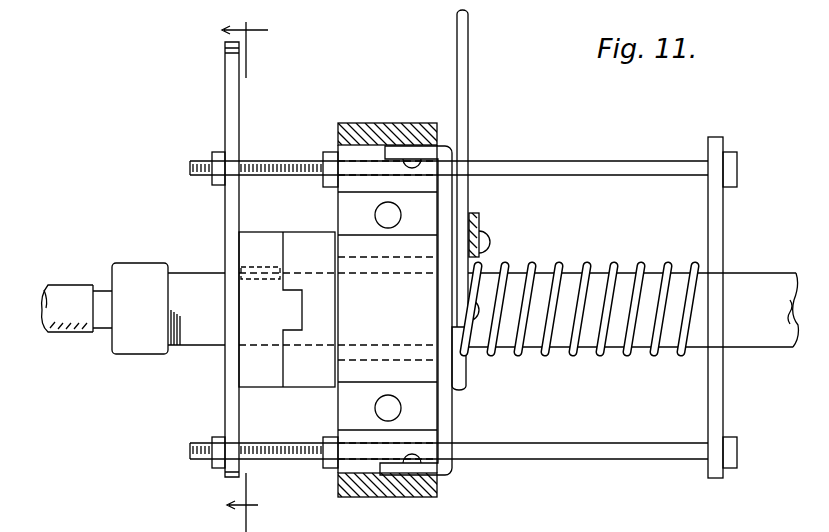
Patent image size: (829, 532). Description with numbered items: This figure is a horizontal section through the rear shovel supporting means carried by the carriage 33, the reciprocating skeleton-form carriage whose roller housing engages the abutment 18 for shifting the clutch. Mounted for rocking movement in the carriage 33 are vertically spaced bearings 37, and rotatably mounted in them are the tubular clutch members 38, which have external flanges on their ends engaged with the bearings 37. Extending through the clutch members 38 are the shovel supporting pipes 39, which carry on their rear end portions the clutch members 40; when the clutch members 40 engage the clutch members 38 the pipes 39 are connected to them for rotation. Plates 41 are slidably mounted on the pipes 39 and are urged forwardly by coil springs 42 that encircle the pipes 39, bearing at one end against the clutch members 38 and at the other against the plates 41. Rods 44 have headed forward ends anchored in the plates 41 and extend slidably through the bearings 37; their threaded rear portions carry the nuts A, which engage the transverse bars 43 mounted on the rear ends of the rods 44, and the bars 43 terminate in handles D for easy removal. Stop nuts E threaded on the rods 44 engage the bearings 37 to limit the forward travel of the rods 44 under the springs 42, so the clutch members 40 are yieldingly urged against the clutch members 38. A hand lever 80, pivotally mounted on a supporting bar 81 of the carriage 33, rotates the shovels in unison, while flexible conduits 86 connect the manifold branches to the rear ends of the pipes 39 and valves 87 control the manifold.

The abutment 18 is at (245, 268).
The carriage 33 is at (358, 107).
The bearings 37 is at (346, 203).
The clutch members 38 is at (317, 370).
The shovel supporting pipes 39 is at (760, 285).
The clutch members 40 is at (255, 368).
The plates 41 is at (722, 210).
The coil springs 42 is at (620, 262).
The transverse bars 43 is at (238, 205).
The rods 44 is at (643, 162).
The hand lever 80 is at (473, 47).
The supporting bar 81 is at (444, 193).
The flexible conduits 86 is at (63, 295).
The valves 87 is at (480, 218).
The nuts A is at (212, 153).
The handles D is at (232, 70).
The stop nuts E is at (328, 150).